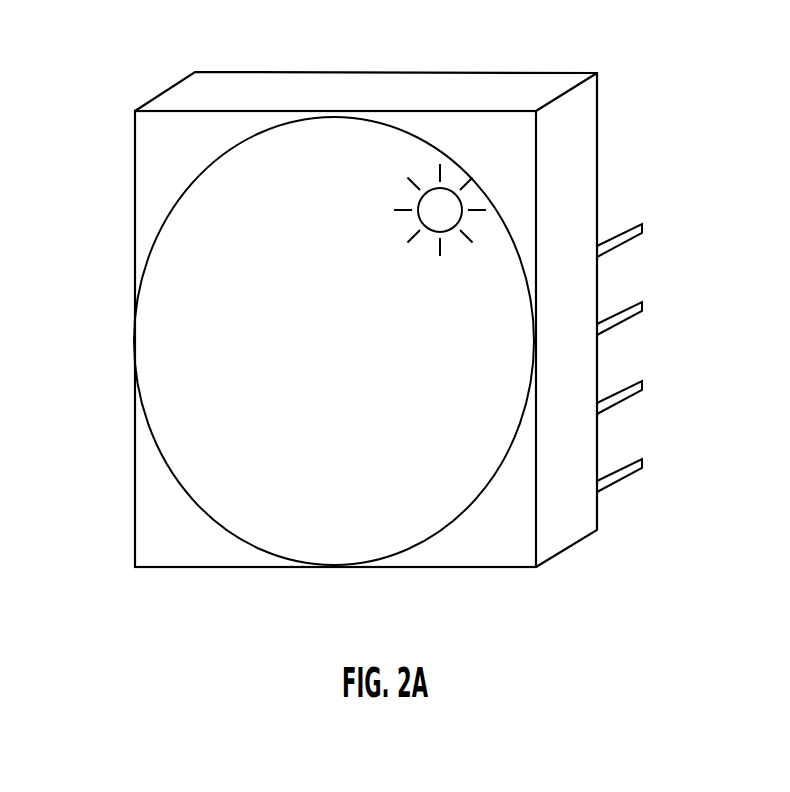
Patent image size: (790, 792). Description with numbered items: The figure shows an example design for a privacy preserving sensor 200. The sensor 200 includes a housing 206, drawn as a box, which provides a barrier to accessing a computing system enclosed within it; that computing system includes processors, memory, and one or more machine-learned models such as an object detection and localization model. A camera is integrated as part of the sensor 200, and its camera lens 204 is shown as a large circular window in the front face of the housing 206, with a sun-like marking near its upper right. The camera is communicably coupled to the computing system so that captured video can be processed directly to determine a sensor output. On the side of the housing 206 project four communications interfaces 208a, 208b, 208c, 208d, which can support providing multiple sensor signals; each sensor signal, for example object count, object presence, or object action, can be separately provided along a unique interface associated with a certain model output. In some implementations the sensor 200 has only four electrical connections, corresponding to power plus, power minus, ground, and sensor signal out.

The privacy preserving sensor 200 is at (118, 39).
The camera lens 204 is at (352, 245).
The housing 206 is at (522, 72).
The communications interface 208a is at (642, 228).
The communications interface 208b is at (642, 306).
The communications interface 208c is at (642, 386).
The communications interface 208d is at (642, 464).